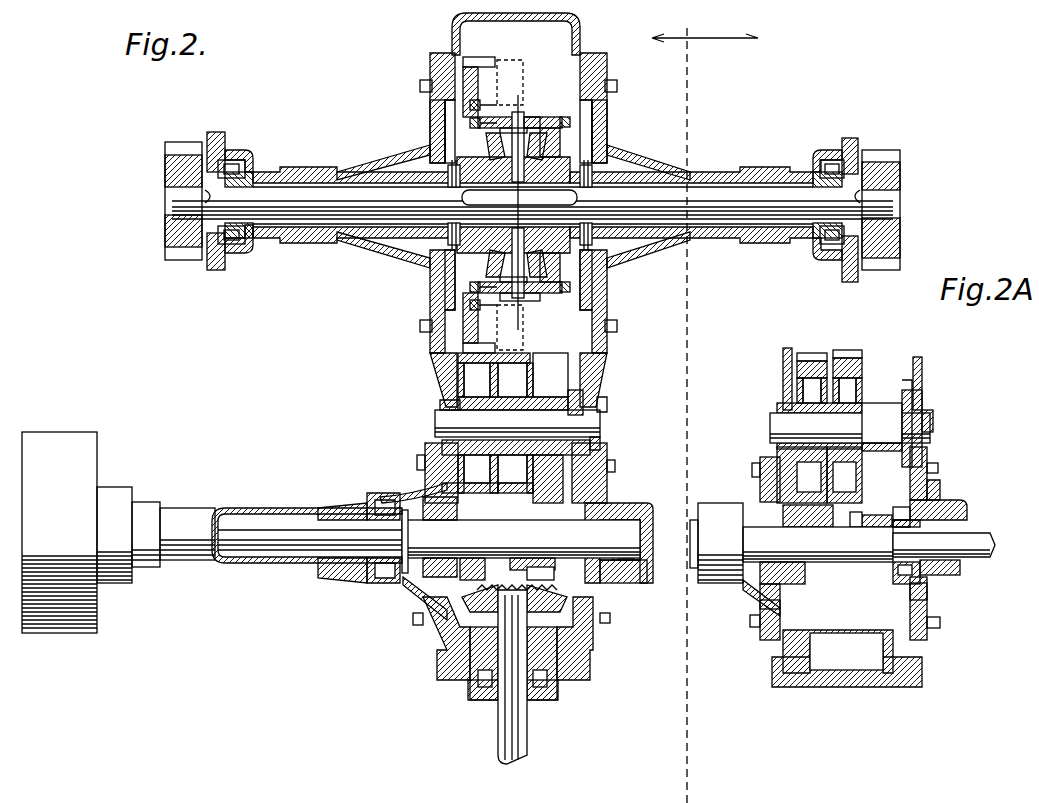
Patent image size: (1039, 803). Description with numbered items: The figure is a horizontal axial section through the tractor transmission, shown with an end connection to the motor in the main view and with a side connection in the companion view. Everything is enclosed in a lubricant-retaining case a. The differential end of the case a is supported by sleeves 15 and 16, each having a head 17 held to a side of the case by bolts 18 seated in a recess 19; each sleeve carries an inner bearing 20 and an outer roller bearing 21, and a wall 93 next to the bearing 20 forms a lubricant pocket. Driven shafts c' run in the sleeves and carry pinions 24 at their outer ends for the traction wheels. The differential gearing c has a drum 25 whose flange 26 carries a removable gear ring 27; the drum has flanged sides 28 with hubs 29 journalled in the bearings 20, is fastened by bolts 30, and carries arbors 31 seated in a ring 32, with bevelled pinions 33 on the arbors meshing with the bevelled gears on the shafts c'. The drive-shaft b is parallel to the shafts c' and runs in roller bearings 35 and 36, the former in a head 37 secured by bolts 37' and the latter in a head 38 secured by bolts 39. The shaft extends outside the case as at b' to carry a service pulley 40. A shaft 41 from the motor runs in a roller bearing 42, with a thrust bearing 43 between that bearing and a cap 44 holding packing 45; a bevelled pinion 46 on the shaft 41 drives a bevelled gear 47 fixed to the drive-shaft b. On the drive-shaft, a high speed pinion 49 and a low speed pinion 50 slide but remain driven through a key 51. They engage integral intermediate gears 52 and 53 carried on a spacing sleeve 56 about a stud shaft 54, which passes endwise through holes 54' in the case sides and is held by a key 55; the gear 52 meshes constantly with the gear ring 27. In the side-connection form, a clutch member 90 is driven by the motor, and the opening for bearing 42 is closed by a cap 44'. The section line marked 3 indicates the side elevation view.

In FIG. 2, the section line indicator 3 is at (705, 26).
In FIG. 2, the sleeve 15 is at (385, 248).
In FIG. 2, the sleeve 16 is at (655, 246).
In FIG. 2, the flange or head 17 is at (430, 122).
In FIG. 2, the bolts 18 is at (420, 84).
In FIG. 2, the recess 19 is at (430, 62).
In FIG. 2, the bearing 20 is at (588, 172).
In FIG. 2, the roller bearing 21 is at (250, 165).
In FIG. 2, the pinion 24 is at (186, 262).
In FIG. 2, the drum 25 is at (530, 300).
In FIG. 2, the flange 26 is at (495, 108).
In FIG. 2, the gear ring 27 is at (480, 80).
In FIG. 2, the flanged sides 28 is at (478, 145).
In FIG. 2, the hub 29 is at (448, 178).
In FIG. 2, the bolts 30 is at (548, 125).
In FIG. 2, the arbors 31 is at (522, 115).
In FIG. 2, the ring 32 is at (565, 148).
In FIG. 2, the bevelled pinions 33 is at (560, 140).
In FIG. 2, the roller bearing 35 is at (367, 585).
In FIG. 2, the roller bearing 36 is at (622, 578).
In FIG. 2A, the roller bearing 36 is at (925, 590).
In FIG. 2, the head 37 is at (370, 530).
In FIG. 2A, the head 37 is at (716, 543).
In FIG. 2, the bolts 37' is at (411, 537).
In FIG. 2A, the bolts 37' is at (737, 552).
In FIG. 2, the head 38 is at (607, 490).
In FIG. 2A, the head 38 is at (940, 487).
In FIG. 2, the bolts 39 is at (613, 466).
In FIG. 2A, the bolts 39 is at (938, 466).
In FIG. 2, the service pulley 40 is at (118, 532).
In FIG. 2, the shaft 41 is at (527, 740).
In FIG. 2, the roller bearing 42 is at (440, 662).
In FIG. 2, the thrust bearing 43 is at (478, 680).
In FIG. 2, the cap 44 is at (506, 707).
In FIG. 2A, the cap 44' is at (843, 645).
In FIG. 2, the packing 45 is at (558, 695).
In FIG. 2, the bevelled pinion 46 is at (480, 610).
In FIG. 2, the bevelled gear 47 is at (590, 628).
In FIG. 2, the high speed pinion 49 is at (420, 598).
In FIG. 2A, the high speed pinion 49 is at (752, 590).
In FIG. 2, the low speed pinion 50 is at (525, 572).
In FIG. 2A, the low speed pinion 50 is at (878, 520).
In FIG. 2, the key 51 is at (515, 545).
In FIG. 2A, the key 51 is at (840, 558).
In FIG. 2, the intermediate gear 52 is at (440, 482).
In FIG. 2A, the intermediate gear 52 is at (808, 360).
In FIG. 2, the intermediate gear 53 is at (525, 500).
In FIG. 2A, the intermediate gear 53 is at (850, 360).
In FIG. 2, the stud shaft 54 is at (535, 423).
In FIG. 2A, the stud shaft 54 is at (850, 428).
In FIG. 2, the holes 54' is at (520, 424).
In FIG. 2A, the holes 54' is at (854, 423).
In FIG. 2, the key 55 is at (607, 402).
In FIG. 2A, the key 55 is at (933, 410).
In FIG. 2, the spacing sleeve 56 is at (542, 405).
In FIG. 2A, the spacing sleeve 56 is at (880, 408).
In FIG. 2A, the clutch member 90 is at (967, 507).
In FIG. 2, the wall 93 is at (577, 193).
In FIG. 2, the case a is at (440, 372).
In FIG. 2A, the case a is at (783, 368).
In FIG. 2, the drive-shaft b is at (417, 555).
In FIG. 2A, the drive-shaft b is at (791, 585).
In FIG. 2, the shaft extension b' is at (307, 555).
In FIG. 2, the differential gearing c is at (532, 112).
In FIG. 2, the driven shafts c' is at (532, 205).